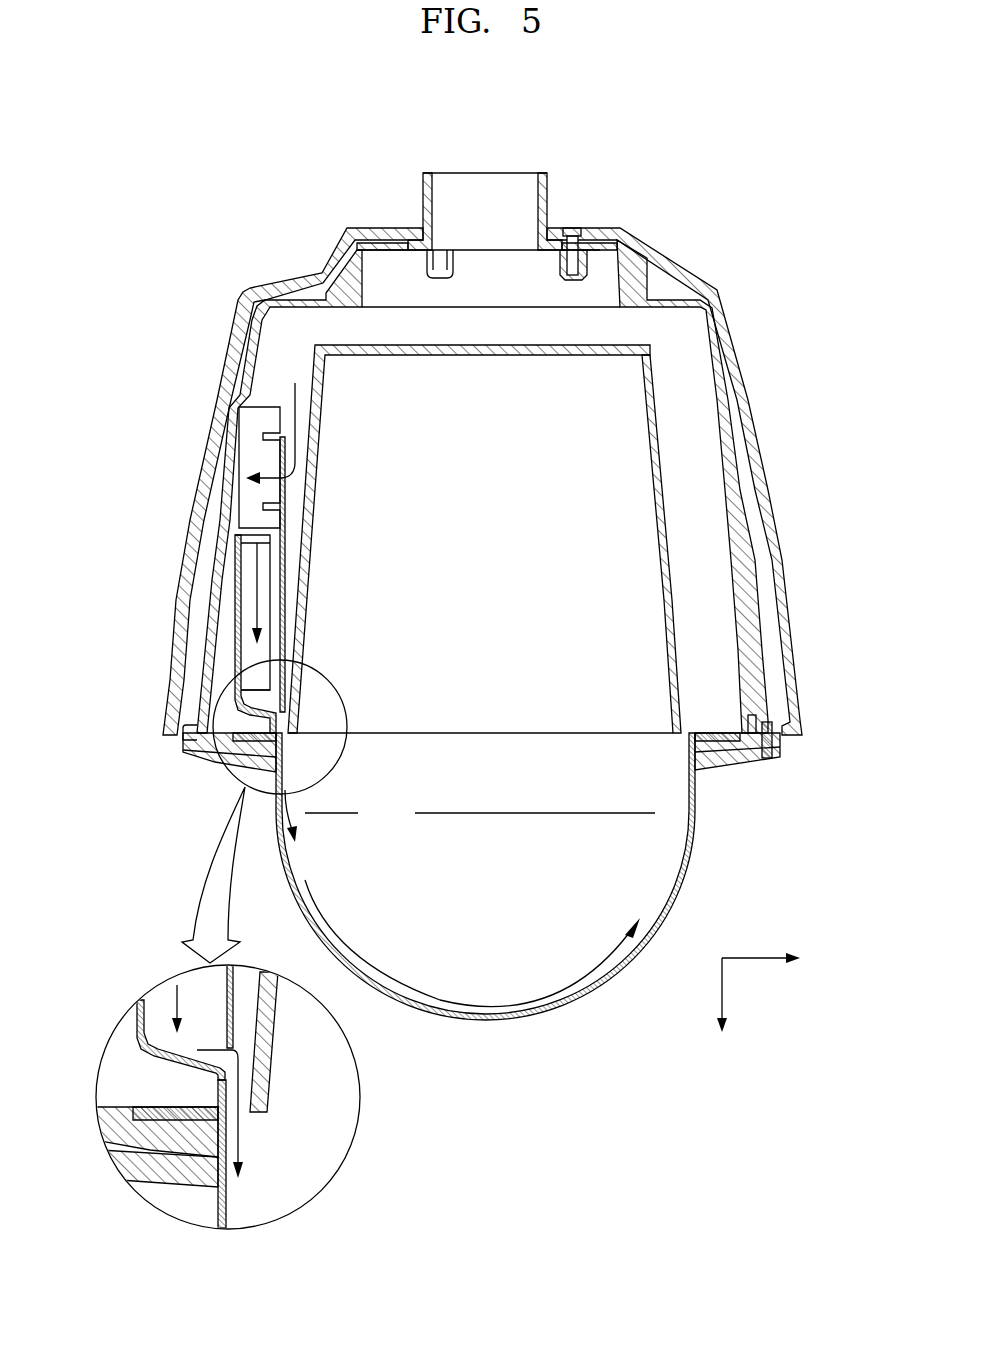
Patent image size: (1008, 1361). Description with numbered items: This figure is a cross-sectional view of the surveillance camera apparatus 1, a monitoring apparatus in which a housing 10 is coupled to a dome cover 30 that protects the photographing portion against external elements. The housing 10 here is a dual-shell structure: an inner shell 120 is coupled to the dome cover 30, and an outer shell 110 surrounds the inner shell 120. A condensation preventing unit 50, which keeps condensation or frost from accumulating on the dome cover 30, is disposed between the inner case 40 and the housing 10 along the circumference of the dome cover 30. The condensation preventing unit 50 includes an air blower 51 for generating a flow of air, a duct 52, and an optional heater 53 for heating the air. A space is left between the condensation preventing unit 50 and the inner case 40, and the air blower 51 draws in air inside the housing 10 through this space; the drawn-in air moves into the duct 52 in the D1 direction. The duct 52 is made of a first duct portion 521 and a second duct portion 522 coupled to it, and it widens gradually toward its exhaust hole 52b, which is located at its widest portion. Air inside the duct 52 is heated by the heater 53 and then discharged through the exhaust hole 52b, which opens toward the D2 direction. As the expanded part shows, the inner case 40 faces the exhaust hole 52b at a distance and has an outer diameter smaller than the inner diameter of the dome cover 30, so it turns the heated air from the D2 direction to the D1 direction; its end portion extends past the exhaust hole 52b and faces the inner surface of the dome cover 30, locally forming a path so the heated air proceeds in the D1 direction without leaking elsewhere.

The surveillance camera apparatus 1 is at (728, 186).
The housing 10 is at (810, 272).
The outer shell 110 is at (725, 300).
The inner shell 120 is at (714, 338).
The dome cover 30 is at (693, 795).
The inner case 40 is at (667, 540).
The condensation preventing unit 50 is at (107, 492).
The air blower 51 is at (247, 492).
The duct 52 is at (224, 590).
The heater 53 is at (247, 655).
The first duct portion 521 is at (140, 1000).
The second duct portion 522 is at (228, 968).
The exhaust hole 52b is at (237, 1057).